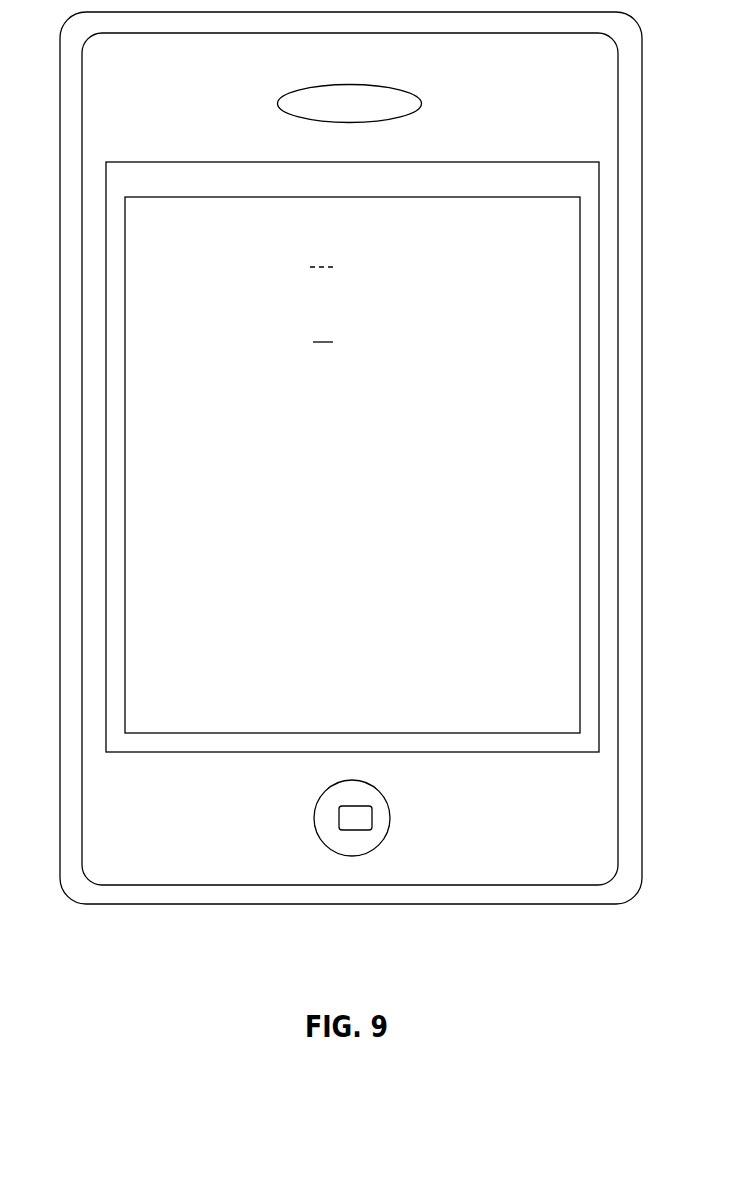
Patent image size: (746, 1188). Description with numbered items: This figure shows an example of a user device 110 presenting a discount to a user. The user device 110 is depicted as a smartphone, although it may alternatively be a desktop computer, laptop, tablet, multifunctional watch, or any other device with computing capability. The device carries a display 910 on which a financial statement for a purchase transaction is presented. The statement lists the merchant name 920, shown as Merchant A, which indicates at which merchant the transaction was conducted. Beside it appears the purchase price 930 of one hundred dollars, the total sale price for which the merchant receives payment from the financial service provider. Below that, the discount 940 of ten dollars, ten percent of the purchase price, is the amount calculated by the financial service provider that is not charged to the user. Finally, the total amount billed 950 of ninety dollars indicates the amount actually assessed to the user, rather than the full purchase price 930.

The user device 110 is at (351, 458).
The display 910 is at (352, 457).
The merchant name 920 is at (225, 248).
The purchase price 930 is at (490, 248).
The discount 940 is at (490, 323).
The total amount billed 950 is at (490, 400).